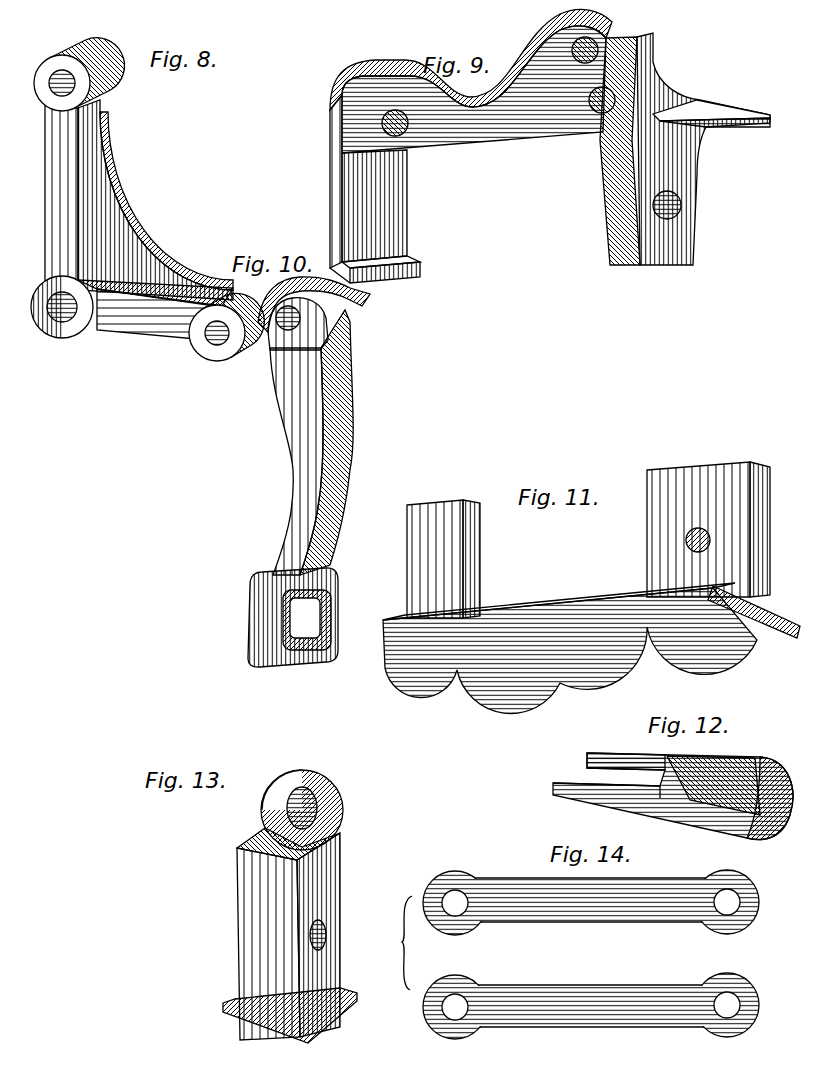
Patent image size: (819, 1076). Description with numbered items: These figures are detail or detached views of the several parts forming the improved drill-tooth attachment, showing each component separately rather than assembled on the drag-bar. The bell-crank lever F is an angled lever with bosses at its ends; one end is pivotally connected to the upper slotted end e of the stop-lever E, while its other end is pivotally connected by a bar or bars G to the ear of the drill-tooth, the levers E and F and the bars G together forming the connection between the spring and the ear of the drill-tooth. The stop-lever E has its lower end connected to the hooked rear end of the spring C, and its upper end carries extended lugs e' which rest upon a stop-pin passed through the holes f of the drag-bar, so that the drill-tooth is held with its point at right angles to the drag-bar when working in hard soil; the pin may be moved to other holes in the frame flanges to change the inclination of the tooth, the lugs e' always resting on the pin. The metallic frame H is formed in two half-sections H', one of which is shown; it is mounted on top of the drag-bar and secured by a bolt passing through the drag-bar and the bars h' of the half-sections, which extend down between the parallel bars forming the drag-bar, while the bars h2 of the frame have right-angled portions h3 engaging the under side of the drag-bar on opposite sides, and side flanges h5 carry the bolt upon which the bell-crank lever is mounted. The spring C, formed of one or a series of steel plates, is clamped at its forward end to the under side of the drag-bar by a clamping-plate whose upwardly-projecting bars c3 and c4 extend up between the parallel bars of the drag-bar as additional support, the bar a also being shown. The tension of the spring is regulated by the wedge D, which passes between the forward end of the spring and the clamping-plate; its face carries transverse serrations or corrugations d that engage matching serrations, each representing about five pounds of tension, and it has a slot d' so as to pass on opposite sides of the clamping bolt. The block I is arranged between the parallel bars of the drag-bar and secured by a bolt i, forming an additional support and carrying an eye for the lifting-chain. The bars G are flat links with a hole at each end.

In FIG. 8, the bell-crank lever F is at (128, 229).
In FIG. 9, the metallic frame H is at (550, 141).
In FIG. 9, the half-section of frame H' is at (474, 98).
In FIG. 9, the side flanges of frame h5 is at (471, 70).
In FIG. 9, the bars of frame h2 is at (374, 206).
In FIG. 9, the right-angled portions h3 is at (387, 269).
In FIG. 9, the holes of drag-bar f is at (498, 86).
In FIG. 9, the bars of half-sections h' is at (685, 149).
In FIG. 10, the stop-lever E is at (250, 466).
In FIG. 10, the upper slotted end of stop-lever e is at (314, 304).
In FIG. 10, the extended lugs of lever e' is at (327, 318).
In FIG. 11, the spring C is at (591, 587).
In FIG. 11, the upwardly-projecting bar of clamping-plate c3 is at (456, 559).
In FIG. 11, the upwardly-projecting bar of clamping-plate c4 is at (708, 529).
In FIG. 11, the bar a is at (776, 646).
In FIG. 12, the wedge D is at (673, 789).
In FIG. 12, the transverse serrations or corrugations d is at (713, 776).
In FIG. 12, the slot d' is at (609, 775).
In FIG. 13, the block I is at (290, 906).
In FIG. 13, the bolt i is at (325, 806).
In FIG. 14, the bar or bars G is at (591, 951).